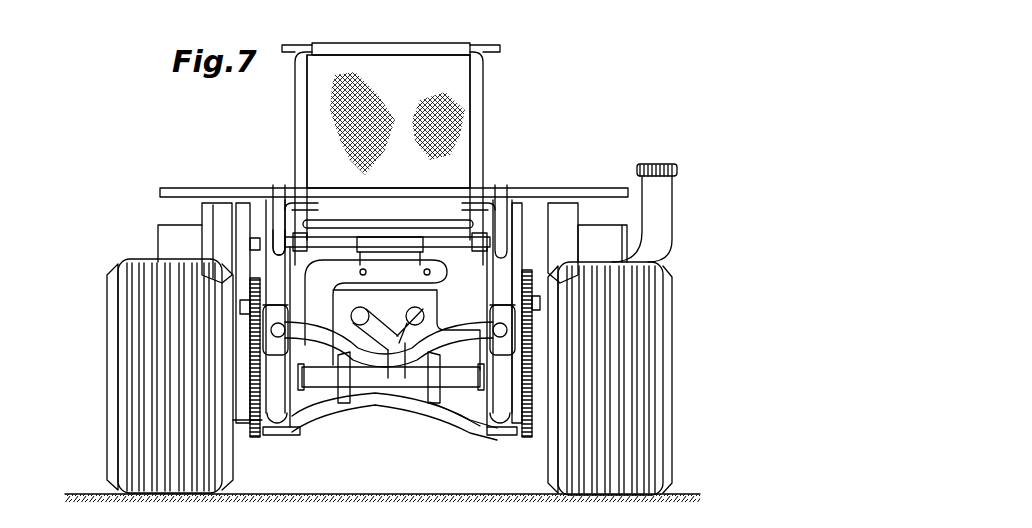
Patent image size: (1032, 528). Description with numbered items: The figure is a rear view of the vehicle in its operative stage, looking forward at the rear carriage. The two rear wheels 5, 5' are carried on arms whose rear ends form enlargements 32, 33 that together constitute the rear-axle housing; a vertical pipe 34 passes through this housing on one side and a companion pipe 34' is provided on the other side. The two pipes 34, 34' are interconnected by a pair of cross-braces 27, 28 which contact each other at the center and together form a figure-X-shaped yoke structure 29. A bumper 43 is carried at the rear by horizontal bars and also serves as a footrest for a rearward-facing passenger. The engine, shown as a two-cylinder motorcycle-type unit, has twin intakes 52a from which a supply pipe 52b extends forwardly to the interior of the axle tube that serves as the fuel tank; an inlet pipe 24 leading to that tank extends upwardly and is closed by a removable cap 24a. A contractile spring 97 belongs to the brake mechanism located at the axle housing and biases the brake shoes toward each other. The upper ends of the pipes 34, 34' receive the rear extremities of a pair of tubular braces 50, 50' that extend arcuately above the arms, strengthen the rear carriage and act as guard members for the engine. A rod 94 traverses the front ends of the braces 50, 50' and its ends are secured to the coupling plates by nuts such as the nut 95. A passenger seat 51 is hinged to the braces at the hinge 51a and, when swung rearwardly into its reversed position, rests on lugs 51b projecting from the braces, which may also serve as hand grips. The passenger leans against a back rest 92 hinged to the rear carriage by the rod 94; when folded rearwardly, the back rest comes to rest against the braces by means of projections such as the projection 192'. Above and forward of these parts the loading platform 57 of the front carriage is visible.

The rear wheel 5 is at (136, 376).
The rear wheel 5' is at (627, 378).
The inlet pipe 24 is at (672, 207).
The removable cap 24a is at (678, 166).
The cross-brace 27 is at (283, 330).
The cross-brace 28 is at (320, 417).
The yoke structure 29 is at (424, 417).
The enlargement 32 is at (283, 410).
The enlargement 33 is at (272, 413).
The vertical pipe 34 is at (181, 268).
The vertical pipe 34' is at (535, 233).
The bumper 43 is at (384, 382).
The tubular brace 50 is at (249, 279).
The tubular brace 50' is at (517, 272).
The passenger seat 51 is at (442, 187).
The hinge 51a is at (275, 217).
The lug 51b is at (277, 218).
The twin intakes 52a is at (413, 318).
The supply pipe 52b is at (395, 341).
The loading platform 57 is at (172, 188).
The back rest 92 is at (492, 82).
The rod 94 is at (460, 247).
The nut 95 is at (250, 243).
The contractile spring 97 is at (253, 435).
The projection 192' is at (532, 174).